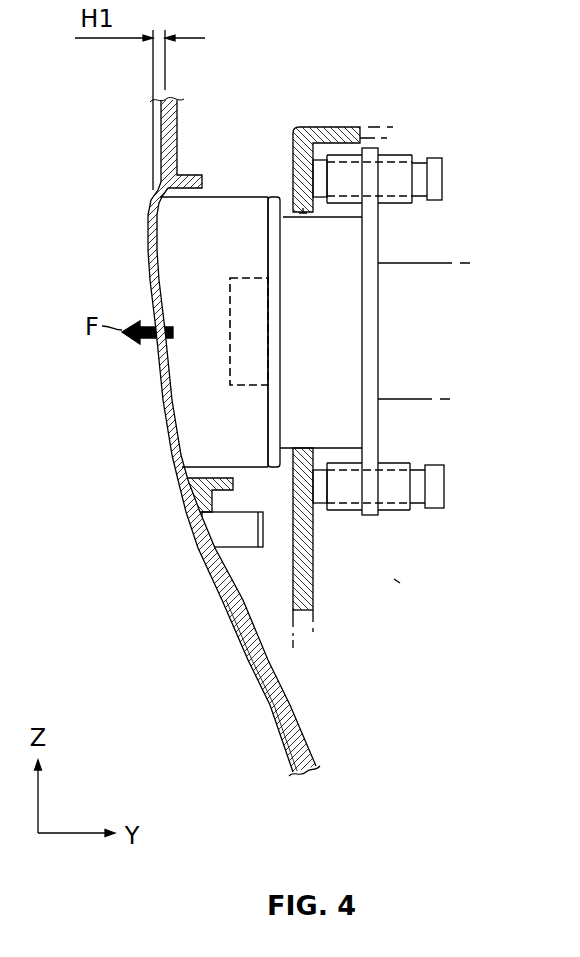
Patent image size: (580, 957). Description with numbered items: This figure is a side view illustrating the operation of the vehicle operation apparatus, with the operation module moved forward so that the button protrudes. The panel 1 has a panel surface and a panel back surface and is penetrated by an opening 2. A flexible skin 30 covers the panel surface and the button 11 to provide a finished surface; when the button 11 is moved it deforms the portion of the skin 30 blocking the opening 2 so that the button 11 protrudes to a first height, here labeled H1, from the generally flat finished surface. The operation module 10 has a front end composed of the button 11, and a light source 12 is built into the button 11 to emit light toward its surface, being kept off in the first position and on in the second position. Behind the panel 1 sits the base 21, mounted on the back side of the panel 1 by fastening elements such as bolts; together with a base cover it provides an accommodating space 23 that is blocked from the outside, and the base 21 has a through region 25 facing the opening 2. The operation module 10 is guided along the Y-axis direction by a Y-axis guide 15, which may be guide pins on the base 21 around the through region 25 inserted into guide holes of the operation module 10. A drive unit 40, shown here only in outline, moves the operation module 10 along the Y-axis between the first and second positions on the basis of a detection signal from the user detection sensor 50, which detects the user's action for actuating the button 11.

The panel 1 is at (300, 729).
The opening 2 is at (194, 193).
The operation module 10 is at (237, 173).
The button 11 is at (177, 272).
The light source 12 is at (230, 367).
The Y-axis guide 15 is at (434, 165).
The base 21 is at (307, 592).
The accommodating space 23 is at (397, 582).
The through region 25 is at (303, 213).
The skin 30 is at (240, 648).
The drive unit 40 is at (414, 272).
The user detection sensor 50 is at (220, 529).